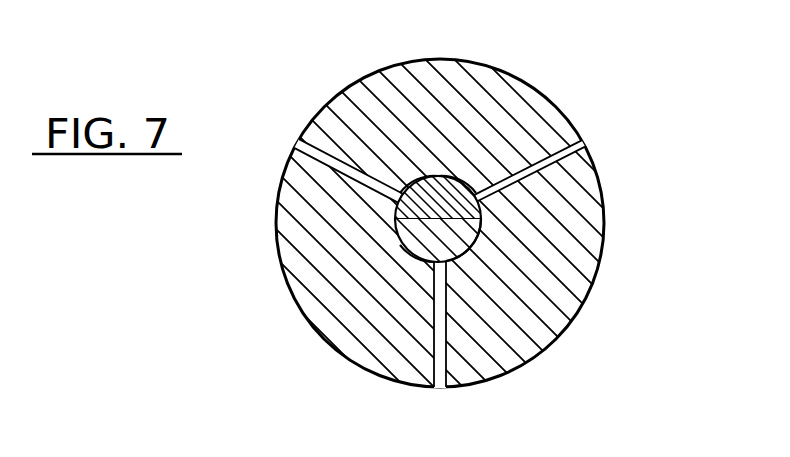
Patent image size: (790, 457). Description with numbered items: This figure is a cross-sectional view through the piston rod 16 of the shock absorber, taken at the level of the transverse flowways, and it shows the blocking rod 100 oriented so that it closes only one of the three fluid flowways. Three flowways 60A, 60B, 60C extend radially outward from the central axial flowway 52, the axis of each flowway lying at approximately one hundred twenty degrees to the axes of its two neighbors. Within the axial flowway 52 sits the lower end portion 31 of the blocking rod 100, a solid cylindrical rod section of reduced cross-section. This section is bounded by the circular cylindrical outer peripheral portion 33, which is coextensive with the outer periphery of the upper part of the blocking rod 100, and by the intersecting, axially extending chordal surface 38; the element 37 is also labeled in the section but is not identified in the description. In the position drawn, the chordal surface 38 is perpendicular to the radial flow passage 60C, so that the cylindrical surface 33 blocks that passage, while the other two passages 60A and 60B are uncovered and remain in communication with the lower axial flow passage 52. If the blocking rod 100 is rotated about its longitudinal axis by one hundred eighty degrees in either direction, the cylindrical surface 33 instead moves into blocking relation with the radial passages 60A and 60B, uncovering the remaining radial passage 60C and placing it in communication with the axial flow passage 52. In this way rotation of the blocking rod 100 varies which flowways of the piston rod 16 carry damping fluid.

The piston rod 16 is at (584, 312).
The lower end portion 31 is at (399, 237).
The circular cylindrical outer peripheral portion 33 is at (417, 257).
The bore 37 is at (420, 177).
The chordal surface 38 is at (455, 179).
The axial flowway 52 is at (443, 177).
The flowway 60A is at (582, 138).
The flowway 60B is at (303, 138).
The flowway 60C is at (443, 392).
The blocking rod 100 is at (476, 241).